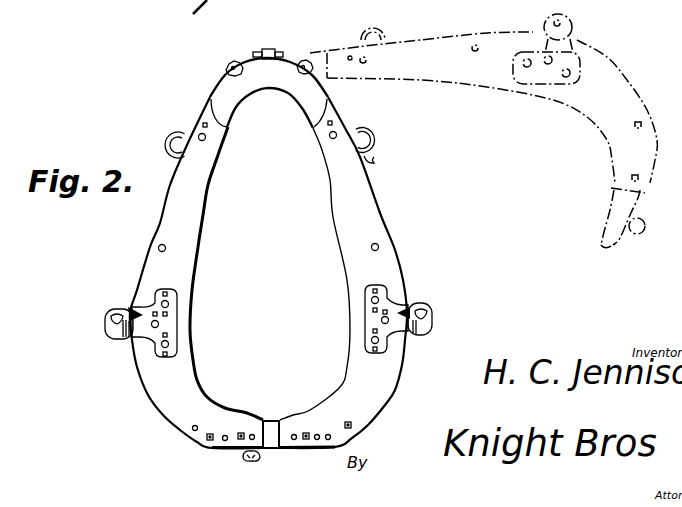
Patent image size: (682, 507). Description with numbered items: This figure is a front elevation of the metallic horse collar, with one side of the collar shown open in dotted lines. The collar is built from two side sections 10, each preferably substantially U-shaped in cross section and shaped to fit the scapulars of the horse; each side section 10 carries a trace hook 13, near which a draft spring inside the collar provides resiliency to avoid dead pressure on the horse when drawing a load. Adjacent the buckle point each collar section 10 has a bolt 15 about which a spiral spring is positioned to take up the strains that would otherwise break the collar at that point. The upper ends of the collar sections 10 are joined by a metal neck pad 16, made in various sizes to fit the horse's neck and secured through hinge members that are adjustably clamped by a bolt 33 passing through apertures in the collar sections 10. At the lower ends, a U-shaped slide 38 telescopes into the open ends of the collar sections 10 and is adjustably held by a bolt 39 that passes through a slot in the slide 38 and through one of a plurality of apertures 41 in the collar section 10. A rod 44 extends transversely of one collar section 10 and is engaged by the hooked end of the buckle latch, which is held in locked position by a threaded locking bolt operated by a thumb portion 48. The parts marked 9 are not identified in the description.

The bolts securing the top cap 9 is at (242, 135).
The side sections 10 is at (167, 215).
The trace hook 13 is at (413, 335).
The bolt 15 is at (352, 427).
The neck pad 16 is at (282, 88).
The bolt 33 is at (329, 138).
The U-shaped slide 38 is at (270, 430).
The bolt 39 is at (306, 442).
The apertures 41 is at (328, 440).
The rod 44 is at (236, 442).
The thumb portion 48 is at (250, 461).